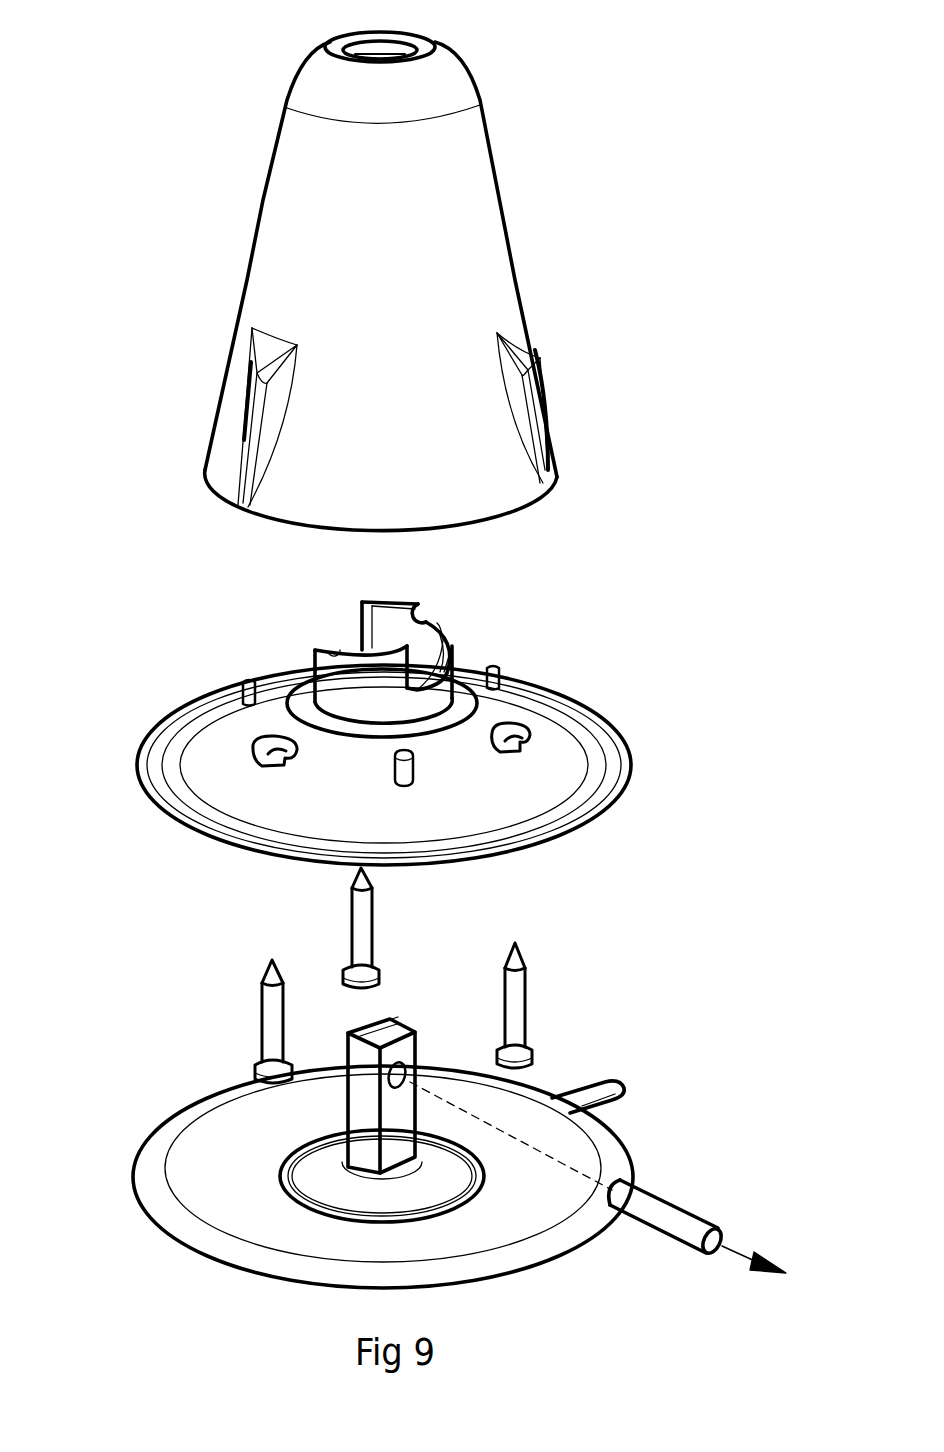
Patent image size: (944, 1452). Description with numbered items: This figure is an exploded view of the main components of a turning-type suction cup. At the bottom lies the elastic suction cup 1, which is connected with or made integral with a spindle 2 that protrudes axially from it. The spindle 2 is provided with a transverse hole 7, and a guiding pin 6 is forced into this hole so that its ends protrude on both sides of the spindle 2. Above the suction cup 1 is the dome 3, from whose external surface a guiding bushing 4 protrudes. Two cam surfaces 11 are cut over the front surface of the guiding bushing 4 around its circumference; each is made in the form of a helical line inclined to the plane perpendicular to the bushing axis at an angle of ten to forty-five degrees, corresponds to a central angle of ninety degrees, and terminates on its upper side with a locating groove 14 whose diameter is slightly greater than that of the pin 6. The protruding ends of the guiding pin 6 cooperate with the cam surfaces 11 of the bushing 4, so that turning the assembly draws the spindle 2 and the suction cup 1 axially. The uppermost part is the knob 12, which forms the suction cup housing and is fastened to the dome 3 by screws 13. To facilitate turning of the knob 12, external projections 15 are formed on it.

The elastic suction cup 1 is at (245, 1228).
The spindle 2 is at (365, 1112).
The dome 3 is at (190, 755).
The guiding bushing 4 is at (333, 672).
The guiding pin 6 is at (698, 1237).
The transverse hole 7 is at (405, 1078).
The cam surface 11 is at (437, 655).
The knob 12 is at (293, 262).
The screws 13 is at (270, 1005).
The locating groove 14 is at (430, 615).
The external projections 15 is at (537, 367).